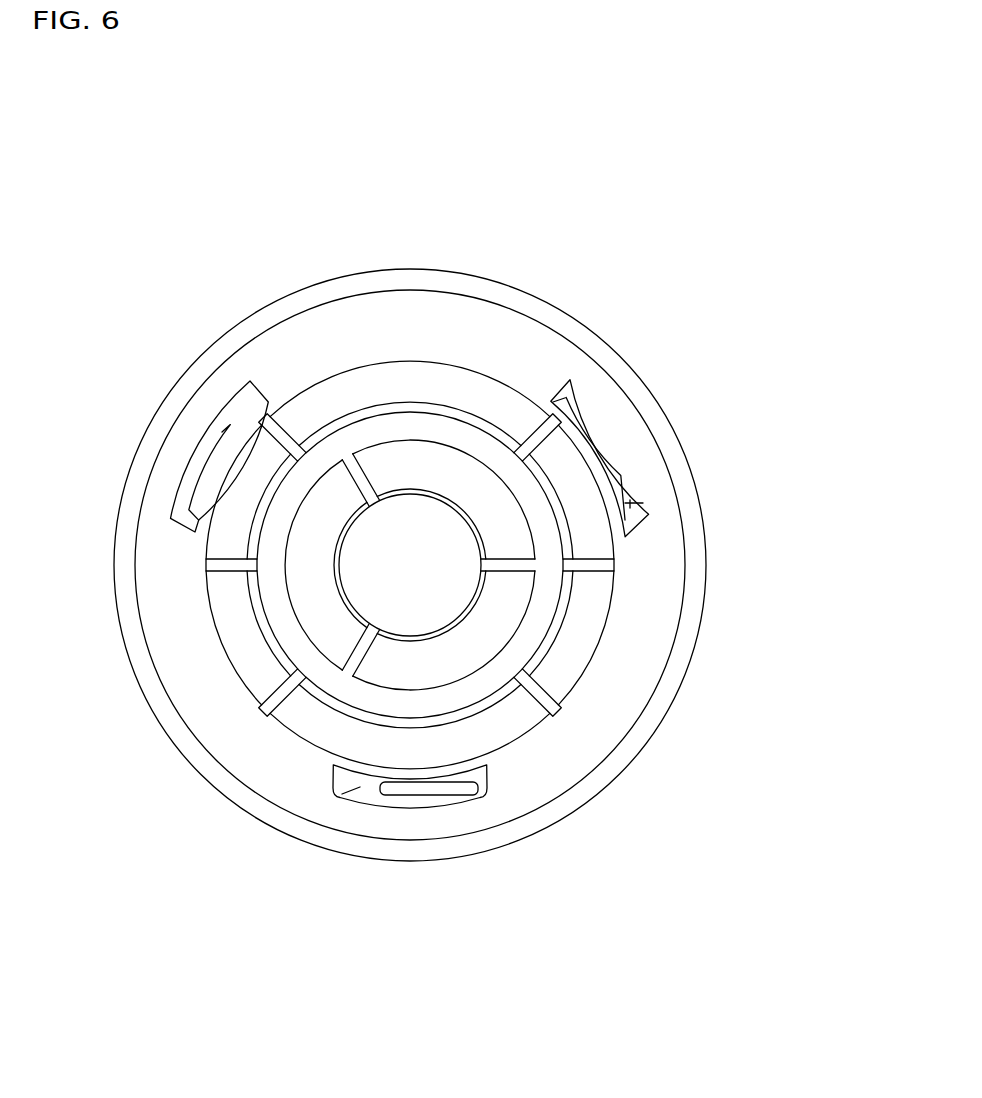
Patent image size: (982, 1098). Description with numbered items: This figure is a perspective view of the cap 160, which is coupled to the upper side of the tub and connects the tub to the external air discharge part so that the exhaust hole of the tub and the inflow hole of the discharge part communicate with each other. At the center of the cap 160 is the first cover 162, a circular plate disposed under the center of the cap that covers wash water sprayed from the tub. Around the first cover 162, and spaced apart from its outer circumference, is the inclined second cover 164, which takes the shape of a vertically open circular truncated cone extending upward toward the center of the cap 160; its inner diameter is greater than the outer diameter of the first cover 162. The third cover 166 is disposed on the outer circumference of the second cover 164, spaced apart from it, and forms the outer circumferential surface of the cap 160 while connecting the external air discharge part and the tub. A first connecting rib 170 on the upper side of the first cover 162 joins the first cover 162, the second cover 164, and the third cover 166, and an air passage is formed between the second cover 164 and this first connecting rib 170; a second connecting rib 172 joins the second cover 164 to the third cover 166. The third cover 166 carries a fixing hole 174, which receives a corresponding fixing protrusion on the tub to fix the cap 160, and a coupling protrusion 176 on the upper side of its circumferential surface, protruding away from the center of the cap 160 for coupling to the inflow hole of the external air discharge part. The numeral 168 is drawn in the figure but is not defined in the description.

The cap 160 is at (130, 164).
The first cover 162 is at (427, 530).
The second cover 164 is at (493, 512).
The third cover 166 is at (640, 490).
The outer annular wall 168 is at (525, 345).
The first connecting rib 170 is at (613, 561).
The second connecting rib 172 is at (505, 722).
The fixing hole 174 is at (640, 504).
The coupling protrusion 176 is at (583, 428).